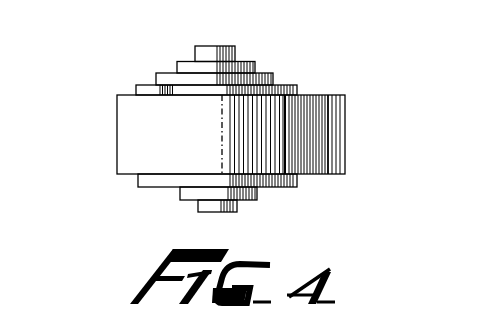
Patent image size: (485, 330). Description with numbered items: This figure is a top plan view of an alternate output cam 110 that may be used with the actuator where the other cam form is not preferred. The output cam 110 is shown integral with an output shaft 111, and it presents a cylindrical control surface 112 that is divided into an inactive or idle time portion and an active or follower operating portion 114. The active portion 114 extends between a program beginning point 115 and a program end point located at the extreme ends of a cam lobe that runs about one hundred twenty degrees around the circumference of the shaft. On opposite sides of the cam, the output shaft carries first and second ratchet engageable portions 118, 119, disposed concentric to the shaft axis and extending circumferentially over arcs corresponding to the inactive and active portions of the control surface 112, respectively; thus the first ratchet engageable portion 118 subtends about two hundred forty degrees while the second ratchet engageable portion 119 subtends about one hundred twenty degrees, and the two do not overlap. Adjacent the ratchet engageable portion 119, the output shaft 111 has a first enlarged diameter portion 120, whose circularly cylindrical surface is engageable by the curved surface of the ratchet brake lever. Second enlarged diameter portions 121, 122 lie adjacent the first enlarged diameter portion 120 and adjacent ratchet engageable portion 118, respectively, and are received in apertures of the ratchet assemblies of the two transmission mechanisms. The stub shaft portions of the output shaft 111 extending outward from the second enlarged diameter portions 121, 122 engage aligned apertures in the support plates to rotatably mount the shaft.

The output cam 110 is at (112, 112).
The output shaft 111 is at (232, 47).
The cylindrical control surface 112 is at (128, 139).
The active or follower operating portion 114 is at (335, 135).
The program beginning point 115 is at (287, 118).
The first ratchet engageable portion 118 is at (145, 85).
The second ratchet engageable portion 119 is at (298, 182).
The first enlarged diameter portion 120 is at (273, 77).
The second enlarged diameter portion 121 is at (256, 63).
The second enlarged diameter portion 122 is at (258, 196).